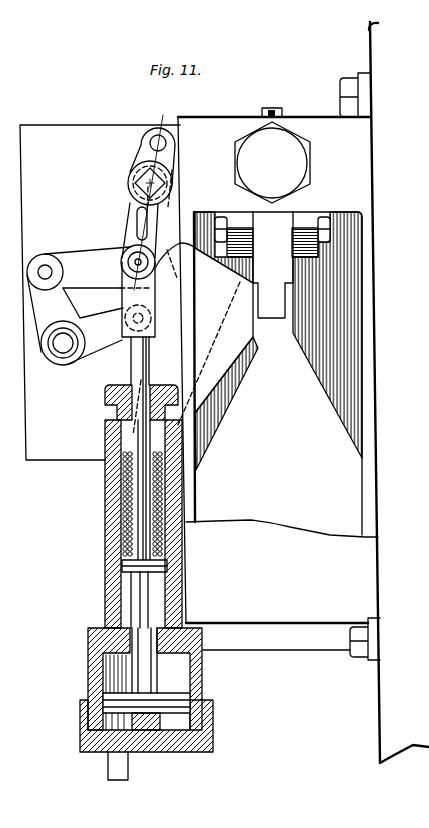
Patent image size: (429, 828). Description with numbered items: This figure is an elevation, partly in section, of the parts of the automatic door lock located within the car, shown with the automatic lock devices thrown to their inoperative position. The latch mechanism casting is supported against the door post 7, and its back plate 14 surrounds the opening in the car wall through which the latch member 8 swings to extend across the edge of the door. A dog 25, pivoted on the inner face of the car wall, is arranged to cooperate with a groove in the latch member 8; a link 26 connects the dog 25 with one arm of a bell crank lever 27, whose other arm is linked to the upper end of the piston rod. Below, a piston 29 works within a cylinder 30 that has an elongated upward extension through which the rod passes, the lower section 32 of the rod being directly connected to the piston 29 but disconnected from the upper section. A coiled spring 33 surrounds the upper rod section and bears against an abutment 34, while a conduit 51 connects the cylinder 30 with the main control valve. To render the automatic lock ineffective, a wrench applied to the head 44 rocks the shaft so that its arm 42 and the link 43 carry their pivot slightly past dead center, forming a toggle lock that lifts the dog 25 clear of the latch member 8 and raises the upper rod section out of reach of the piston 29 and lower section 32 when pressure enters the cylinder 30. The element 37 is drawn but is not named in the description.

The door post 7 is at (388, 556).
The latch member 8 is at (283, 263).
The back plate 14 is at (318, 579).
The dog 25 is at (256, 264).
The link 26 is at (88, 262).
The bell crank lever 27 is at (75, 320).
The piston 29 is at (190, 696).
The cylinder 30 is at (80, 709).
The lower section of piston rod 32 is at (140, 637).
The coiled spring 33 is at (118, 498).
The abutment 34 is at (124, 564).
The gland flange 37 is at (137, 414).
The arm 42 is at (136, 157).
The link 43 is at (133, 226).
The head 44 is at (133, 184).
The conduit 51 is at (128, 767).